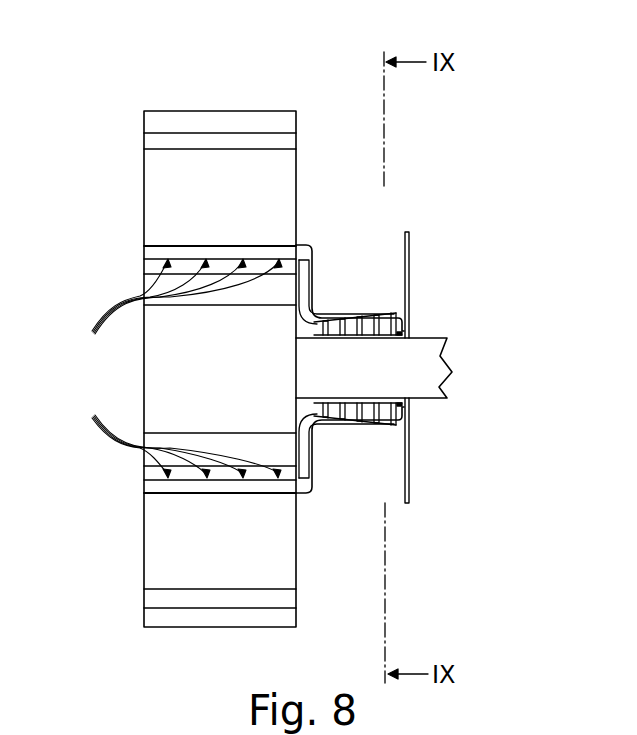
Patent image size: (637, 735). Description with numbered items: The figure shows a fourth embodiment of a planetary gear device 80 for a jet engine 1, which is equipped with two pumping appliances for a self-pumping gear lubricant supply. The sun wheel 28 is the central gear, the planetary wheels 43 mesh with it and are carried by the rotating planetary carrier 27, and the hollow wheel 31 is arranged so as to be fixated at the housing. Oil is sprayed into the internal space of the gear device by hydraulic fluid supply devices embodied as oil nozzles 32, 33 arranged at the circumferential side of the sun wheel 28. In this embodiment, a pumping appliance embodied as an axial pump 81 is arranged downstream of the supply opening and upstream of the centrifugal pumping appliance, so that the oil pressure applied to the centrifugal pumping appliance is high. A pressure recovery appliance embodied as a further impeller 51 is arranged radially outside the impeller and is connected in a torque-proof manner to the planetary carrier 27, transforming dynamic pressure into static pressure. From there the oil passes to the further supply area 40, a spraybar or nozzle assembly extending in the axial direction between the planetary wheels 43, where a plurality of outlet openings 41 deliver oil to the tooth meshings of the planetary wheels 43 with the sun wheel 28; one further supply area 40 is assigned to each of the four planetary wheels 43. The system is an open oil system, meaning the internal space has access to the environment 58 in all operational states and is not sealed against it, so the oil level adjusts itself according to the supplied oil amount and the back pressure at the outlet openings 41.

The jet engine 1 is at (97, 126).
The hollow wheel 31 is at (238, 122).
The planetary gear device 80 is at (274, 94).
The planetary carrier 27 is at (305, 233).
The environment 58 is at (446, 169).
The oil nozzle 32 is at (412, 233).
The axial pump 81 is at (362, 304).
The planetary wheel 43 is at (158, 175).
The further supply area 40 is at (158, 250).
The outlet opening 41 is at (178, 368).
The sun wheel 28 is at (166, 360).
The further impeller 51 is at (312, 503).
The oil nozzle 33 is at (412, 483).